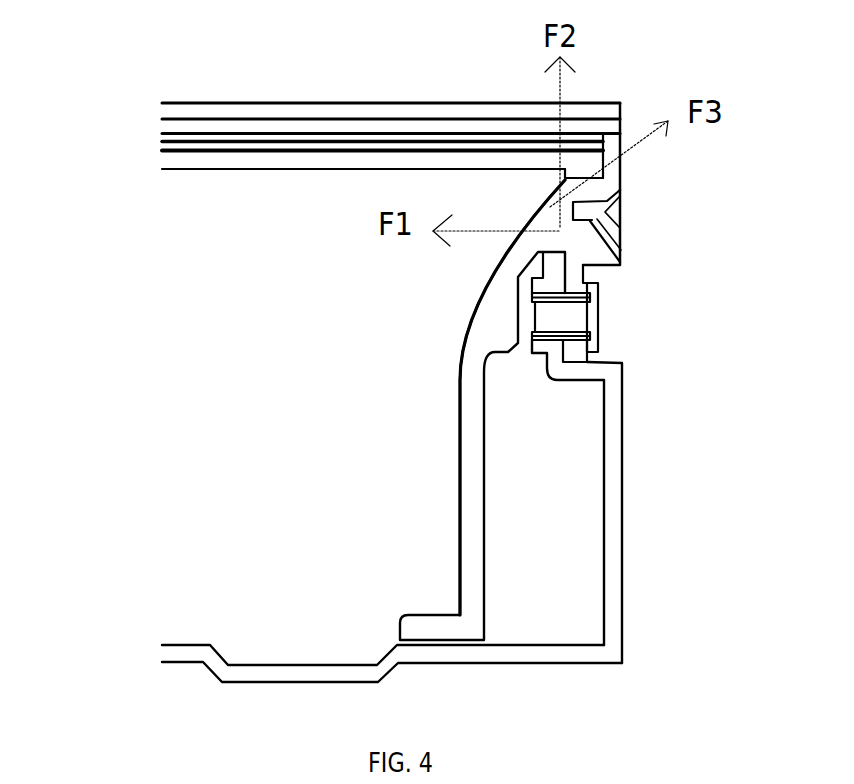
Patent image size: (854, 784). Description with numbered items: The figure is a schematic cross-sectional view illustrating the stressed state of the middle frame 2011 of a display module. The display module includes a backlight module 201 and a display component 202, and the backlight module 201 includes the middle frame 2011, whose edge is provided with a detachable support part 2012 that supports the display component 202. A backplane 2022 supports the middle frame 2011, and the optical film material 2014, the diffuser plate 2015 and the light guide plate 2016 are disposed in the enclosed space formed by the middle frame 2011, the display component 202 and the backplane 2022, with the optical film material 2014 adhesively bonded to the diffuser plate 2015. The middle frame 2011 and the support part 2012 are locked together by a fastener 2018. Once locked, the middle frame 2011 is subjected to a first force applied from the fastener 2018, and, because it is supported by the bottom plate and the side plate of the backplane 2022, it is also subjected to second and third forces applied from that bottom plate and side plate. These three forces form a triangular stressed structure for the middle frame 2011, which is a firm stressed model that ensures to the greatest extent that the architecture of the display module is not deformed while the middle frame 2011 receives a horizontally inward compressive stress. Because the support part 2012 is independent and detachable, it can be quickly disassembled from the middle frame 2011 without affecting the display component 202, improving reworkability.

The backlight module 201 is at (401, 379).
The display component 202 is at (349, 107).
The middle frame 2011 is at (495, 327).
The support part 2012 is at (622, 240).
The optical film material 2014 is at (585, 133).
The diffuser plate 2015 is at (312, 147).
The light guide plate 2016 is at (198, 160).
The fastener 2018 is at (622, 211).
The backplane 2022 is at (430, 652).